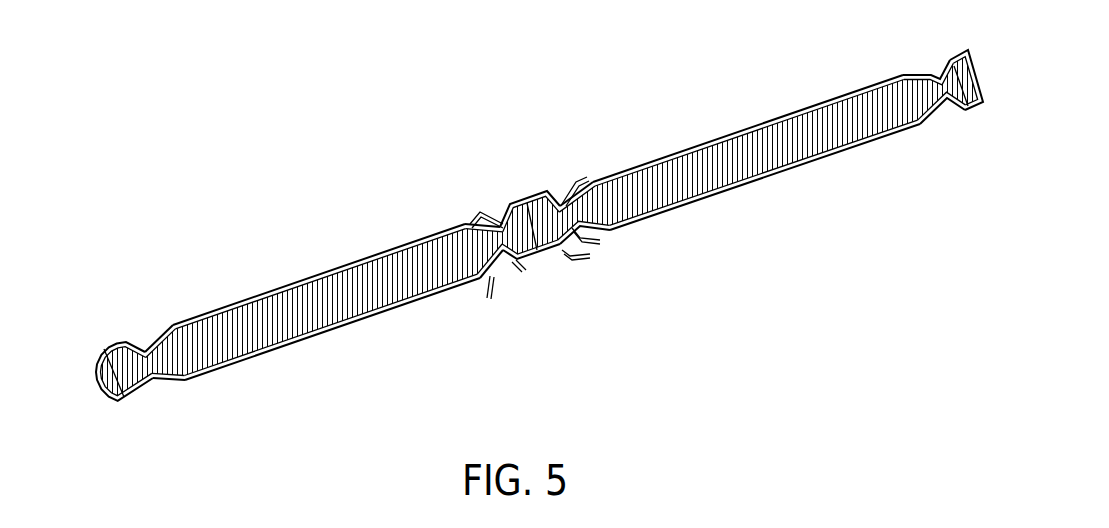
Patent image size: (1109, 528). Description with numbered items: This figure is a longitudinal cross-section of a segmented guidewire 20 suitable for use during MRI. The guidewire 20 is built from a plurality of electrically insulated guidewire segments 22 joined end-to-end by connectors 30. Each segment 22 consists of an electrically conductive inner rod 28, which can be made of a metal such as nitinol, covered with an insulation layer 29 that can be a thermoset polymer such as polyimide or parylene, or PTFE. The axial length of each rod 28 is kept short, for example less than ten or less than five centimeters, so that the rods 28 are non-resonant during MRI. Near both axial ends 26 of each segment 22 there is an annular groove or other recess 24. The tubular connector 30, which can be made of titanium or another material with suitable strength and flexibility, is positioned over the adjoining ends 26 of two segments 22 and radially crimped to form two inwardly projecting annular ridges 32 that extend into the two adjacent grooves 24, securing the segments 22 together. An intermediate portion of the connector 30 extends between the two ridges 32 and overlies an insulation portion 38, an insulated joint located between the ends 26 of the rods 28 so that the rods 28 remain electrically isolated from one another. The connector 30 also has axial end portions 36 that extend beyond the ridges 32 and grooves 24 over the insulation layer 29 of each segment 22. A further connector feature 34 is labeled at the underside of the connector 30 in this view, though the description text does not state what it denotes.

The segmented guidewire 20 is at (301, 115).
The guidewire segment 22 is at (214, 282).
The annular groove 24 is at (144, 351).
The axial end 26 is at (125, 369).
The inner rod 28 is at (285, 298).
The insulation layer 29 is at (363, 258).
The connector 30 is at (550, 291).
The inwardly projecting annular ridge 32 is at (500, 212).
The tab 34 is at (565, 255).
The axial end portion 36 is at (497, 271).
The insulation portion 38 is at (520, 272).